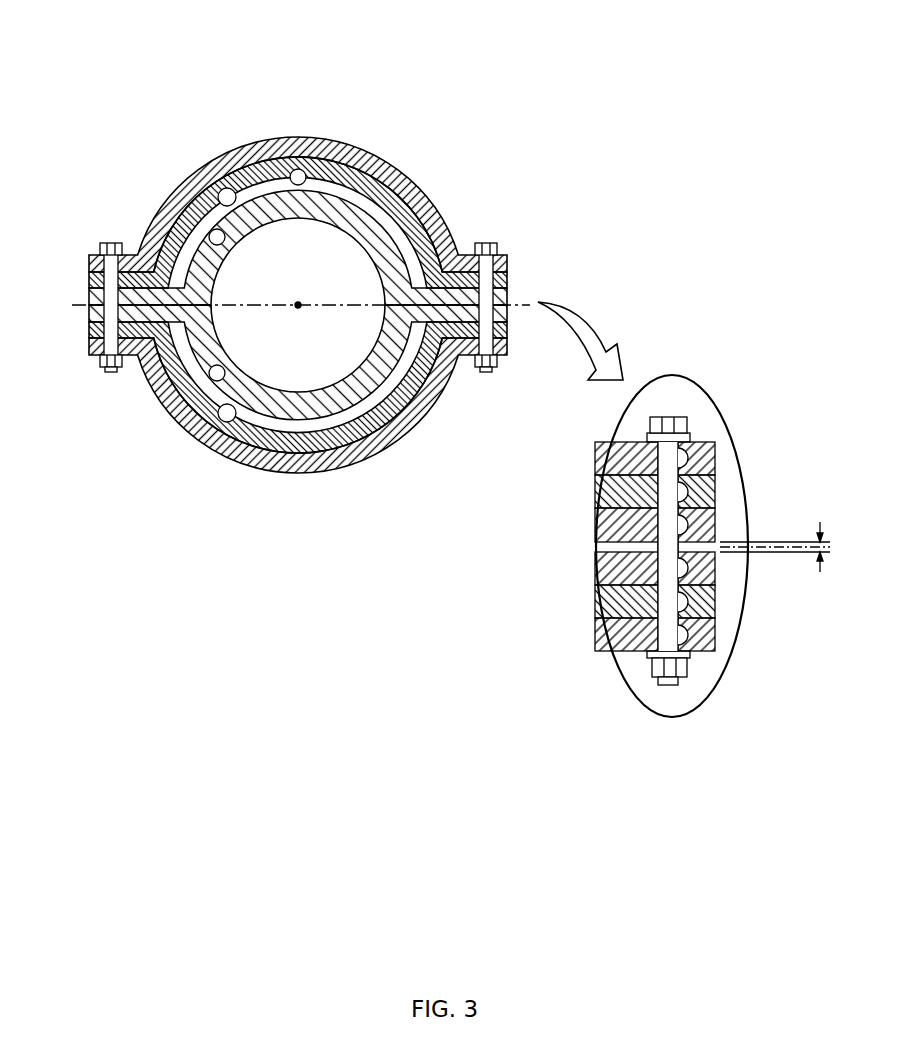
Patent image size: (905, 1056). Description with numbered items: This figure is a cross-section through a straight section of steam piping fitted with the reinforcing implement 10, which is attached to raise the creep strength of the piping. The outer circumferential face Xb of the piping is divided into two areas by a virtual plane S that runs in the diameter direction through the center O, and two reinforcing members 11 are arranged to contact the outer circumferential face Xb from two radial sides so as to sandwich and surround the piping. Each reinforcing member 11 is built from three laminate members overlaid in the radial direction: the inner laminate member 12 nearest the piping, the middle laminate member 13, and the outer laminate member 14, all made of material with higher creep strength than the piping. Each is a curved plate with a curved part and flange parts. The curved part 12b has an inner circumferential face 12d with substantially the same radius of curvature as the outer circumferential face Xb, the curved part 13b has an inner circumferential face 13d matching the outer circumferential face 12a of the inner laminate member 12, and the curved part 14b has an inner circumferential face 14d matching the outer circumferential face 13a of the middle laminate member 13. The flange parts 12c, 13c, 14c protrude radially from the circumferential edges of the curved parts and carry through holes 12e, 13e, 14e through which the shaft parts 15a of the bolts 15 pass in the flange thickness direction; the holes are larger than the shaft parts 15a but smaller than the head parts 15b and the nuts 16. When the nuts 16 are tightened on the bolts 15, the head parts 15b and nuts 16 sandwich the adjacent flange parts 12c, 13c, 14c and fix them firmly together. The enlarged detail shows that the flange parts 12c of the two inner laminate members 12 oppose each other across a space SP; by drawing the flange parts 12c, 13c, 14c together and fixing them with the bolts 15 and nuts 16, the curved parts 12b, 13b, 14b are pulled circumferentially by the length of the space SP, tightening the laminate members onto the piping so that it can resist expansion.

The reinforcing implement 10 is at (150, 76).
The reinforcing member 11 is at (541, 143).
The inner laminate member 12 is at (433, 237).
The outer circumferential face of the inner laminate member 12a is at (180, 213).
The curved part of the inner laminate member 12b is at (322, 178).
The flange part of the inner laminate member 12c is at (89, 296).
The inner circumferential face of the inner laminate member 12d is at (213, 230).
The through hole of the inner flange part 12e is at (688, 525).
The middle laminate member 13 is at (441, 206).
The outer circumferential face of the middle laminate member 13a is at (252, 175).
The curved part of the middle laminate member 13b is at (350, 165).
The flange part of the middle laminate member 13c is at (89, 280).
The inner circumferential face of the middle laminate member 13d is at (224, 190).
The through hole of the middle flange part 13e is at (688, 492).
The outer laminate member 14 is at (431, 177).
The curved part of the outer laminate member 14b is at (393, 150).
The flange part of the outer laminate member 14c is at (89, 262).
The inner circumferential face of the outer laminate member 14d is at (272, 150).
The through hole of the outer flange part 14e is at (688, 458).
The bolt 15 is at (111, 243).
The shaft part of the bolt 15a is at (662, 664).
The head part of the bolt 15b is at (682, 419).
The nut 16 is at (105, 372).
The center of the steam piping O is at (290, 319).
The virtual plane S is at (74, 305).
The space SP is at (775, 536).
The outer circumferential face of the steam piping Xb is at (298, 133).